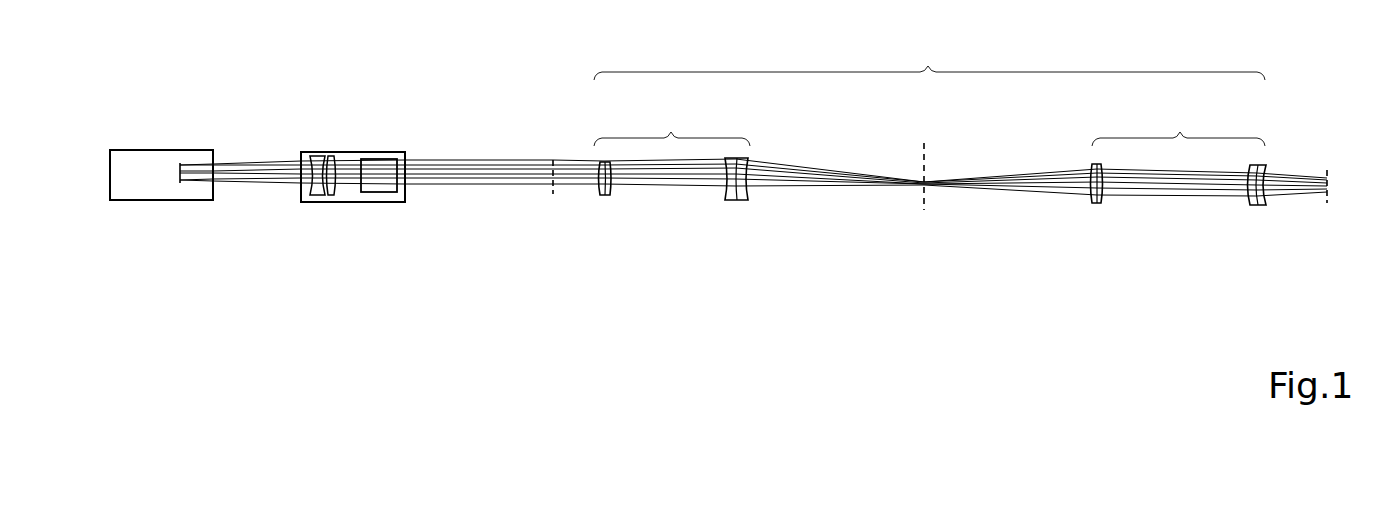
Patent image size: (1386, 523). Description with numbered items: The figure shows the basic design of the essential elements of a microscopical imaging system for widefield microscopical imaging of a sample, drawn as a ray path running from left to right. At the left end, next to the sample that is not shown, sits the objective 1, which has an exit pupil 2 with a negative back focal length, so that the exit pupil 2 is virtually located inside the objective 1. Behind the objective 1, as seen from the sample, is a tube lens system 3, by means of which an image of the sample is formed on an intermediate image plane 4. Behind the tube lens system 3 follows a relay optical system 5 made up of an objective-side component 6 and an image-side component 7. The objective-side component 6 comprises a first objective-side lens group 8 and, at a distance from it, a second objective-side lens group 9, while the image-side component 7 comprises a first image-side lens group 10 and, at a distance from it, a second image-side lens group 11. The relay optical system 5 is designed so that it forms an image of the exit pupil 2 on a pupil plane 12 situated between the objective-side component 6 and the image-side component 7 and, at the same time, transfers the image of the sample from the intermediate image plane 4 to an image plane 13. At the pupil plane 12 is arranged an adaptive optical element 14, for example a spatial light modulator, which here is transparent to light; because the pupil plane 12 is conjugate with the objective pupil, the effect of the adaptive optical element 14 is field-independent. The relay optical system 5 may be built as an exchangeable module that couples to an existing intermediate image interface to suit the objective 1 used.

The objective 1 is at (132, 200).
The exit pupil 2 is at (180, 190).
The tube lens system 3 is at (341, 202).
The intermediate image plane 4 is at (553, 195).
The relay optical system 5 is at (929, 56).
The objective-side component 6 is at (672, 120).
The image-side component 7 is at (1178, 120).
The first objective-side lens group 8 is at (603, 196).
The second objective-side lens group 9 is at (730, 202).
The first image-side lens group 10 is at (1097, 205).
The second image-side lens group 11 is at (1255, 207).
The pupil plane 12 is at (921, 222).
The image plane 13 is at (1327, 205).
The adaptive optical element 14 is at (926, 185).